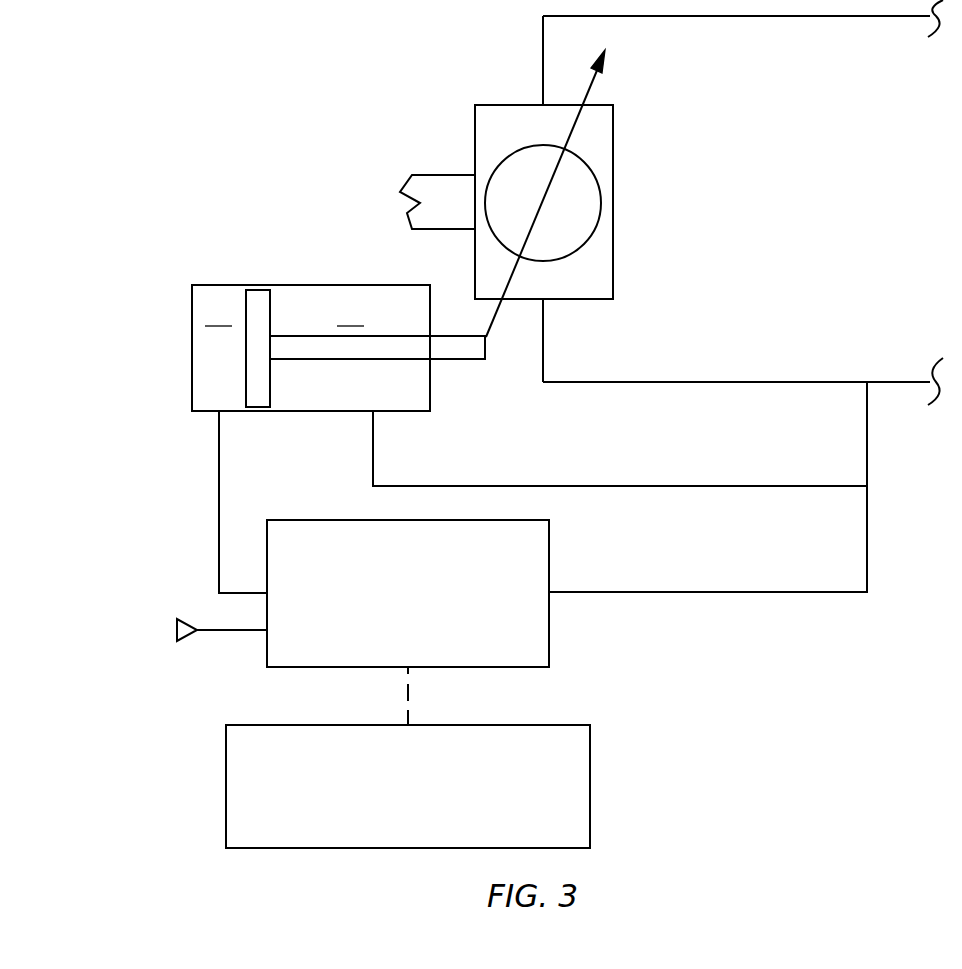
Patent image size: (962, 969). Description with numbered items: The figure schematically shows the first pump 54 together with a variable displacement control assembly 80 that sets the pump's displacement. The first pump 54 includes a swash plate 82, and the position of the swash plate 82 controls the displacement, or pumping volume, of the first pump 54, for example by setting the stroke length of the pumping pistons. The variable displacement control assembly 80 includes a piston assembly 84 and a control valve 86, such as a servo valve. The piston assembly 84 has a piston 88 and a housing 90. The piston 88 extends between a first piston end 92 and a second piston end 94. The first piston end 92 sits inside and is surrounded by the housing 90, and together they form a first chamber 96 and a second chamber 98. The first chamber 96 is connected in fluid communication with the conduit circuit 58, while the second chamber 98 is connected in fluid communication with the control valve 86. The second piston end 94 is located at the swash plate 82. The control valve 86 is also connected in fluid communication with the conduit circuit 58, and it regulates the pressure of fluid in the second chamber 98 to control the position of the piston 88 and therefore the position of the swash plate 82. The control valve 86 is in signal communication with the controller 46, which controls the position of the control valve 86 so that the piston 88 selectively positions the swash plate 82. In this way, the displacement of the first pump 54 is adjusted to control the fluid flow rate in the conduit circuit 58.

The controller 46 is at (422, 818).
The first pump 54 is at (548, 202).
The conduit circuit 58 is at (727, 380).
The variable displacement control assembly 80 is at (359, 256).
The swash plate 82 is at (545, 202).
The piston assembly 84 is at (271, 295).
The control valve 86 is at (422, 626).
The piston 88 is at (333, 362).
The housing 90 is at (192, 390).
The first piston end 92 is at (246, 344).
The second piston end 94 is at (487, 350).
The first chamber 96 is at (350, 313).
The second chamber 98 is at (218, 313).